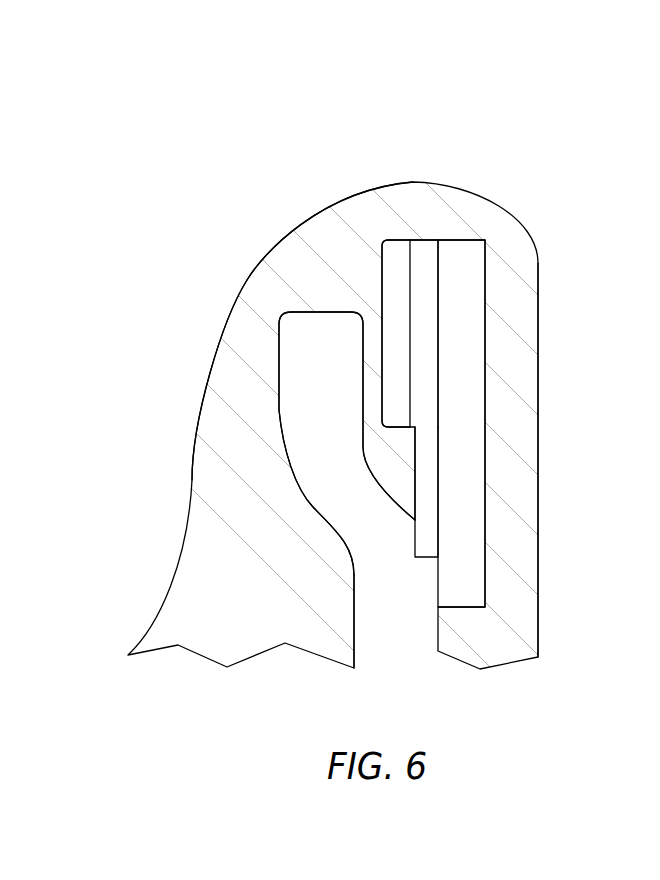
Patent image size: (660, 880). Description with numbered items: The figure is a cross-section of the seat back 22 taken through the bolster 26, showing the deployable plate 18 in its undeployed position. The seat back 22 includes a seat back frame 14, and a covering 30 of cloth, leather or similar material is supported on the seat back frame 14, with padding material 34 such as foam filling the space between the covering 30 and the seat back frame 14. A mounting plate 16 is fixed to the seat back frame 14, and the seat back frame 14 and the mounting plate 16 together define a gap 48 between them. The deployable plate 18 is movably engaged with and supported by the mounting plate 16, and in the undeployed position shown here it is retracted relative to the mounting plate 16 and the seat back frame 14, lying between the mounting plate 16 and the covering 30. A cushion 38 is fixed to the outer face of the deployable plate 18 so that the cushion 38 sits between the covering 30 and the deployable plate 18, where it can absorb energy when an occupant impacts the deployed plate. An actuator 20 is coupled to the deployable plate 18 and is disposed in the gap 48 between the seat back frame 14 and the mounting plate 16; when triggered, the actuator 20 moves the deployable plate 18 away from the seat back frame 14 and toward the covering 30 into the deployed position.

The seat back frame 14 is at (354, 612).
The mounting plate 16 is at (487, 288).
The deployable plate 18 is at (418, 240).
The actuator 20 is at (425, 482).
The seat back 22 is at (505, 188).
The bolster 26 is at (368, 187).
The covering 30 is at (247, 283).
The padding material 34 is at (510, 360).
The cushion 38 is at (398, 238).
The gap 48 is at (398, 448).